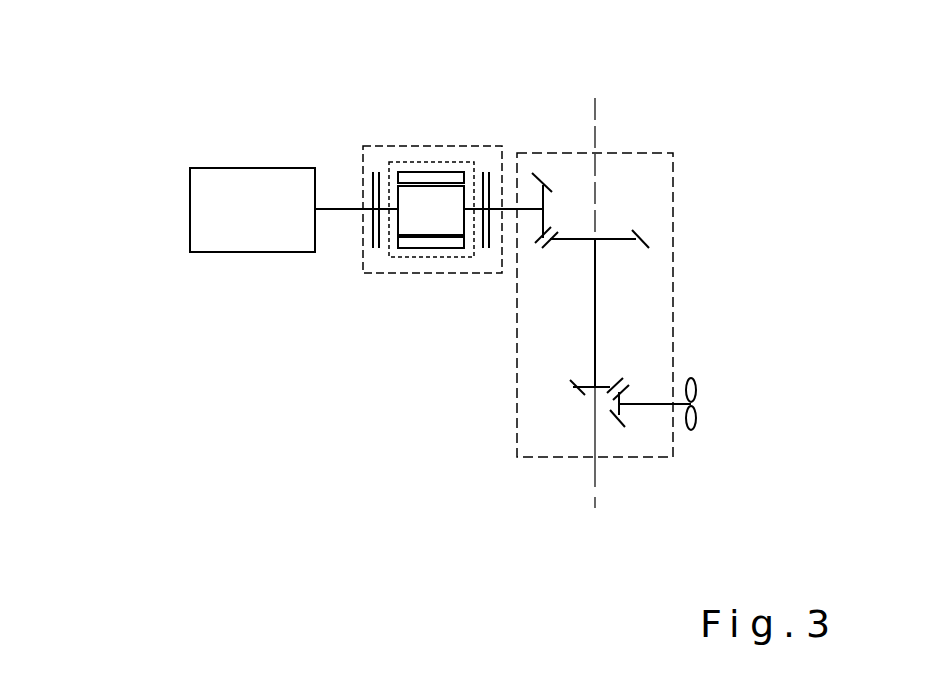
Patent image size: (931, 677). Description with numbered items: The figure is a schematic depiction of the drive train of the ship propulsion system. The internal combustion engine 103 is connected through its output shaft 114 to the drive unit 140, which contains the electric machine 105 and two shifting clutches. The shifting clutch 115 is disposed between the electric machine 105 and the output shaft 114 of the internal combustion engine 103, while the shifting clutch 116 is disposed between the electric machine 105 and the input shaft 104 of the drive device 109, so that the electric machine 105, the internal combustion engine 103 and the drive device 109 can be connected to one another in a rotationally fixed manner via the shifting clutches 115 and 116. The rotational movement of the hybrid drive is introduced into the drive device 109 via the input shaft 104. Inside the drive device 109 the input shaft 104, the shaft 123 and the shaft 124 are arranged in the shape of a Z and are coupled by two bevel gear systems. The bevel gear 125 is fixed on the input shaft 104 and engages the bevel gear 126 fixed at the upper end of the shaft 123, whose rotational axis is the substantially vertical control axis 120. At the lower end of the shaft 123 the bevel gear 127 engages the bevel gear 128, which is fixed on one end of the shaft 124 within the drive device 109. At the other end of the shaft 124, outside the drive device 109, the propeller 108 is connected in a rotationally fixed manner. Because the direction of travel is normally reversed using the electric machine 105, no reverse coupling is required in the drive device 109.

The internal combustion engine 103 is at (240, 195).
The output shaft 114 is at (343, 210).
The drive unit 140 is at (408, 147).
The electric machine 105 is at (440, 162).
The shifting clutch 115 is at (375, 230).
The shifting clutch 116 is at (485, 230).
The input shaft 104 is at (507, 210).
The bevel gear 125 is at (545, 200).
The bevel gear 126 is at (613, 239).
The shaft 123 is at (597, 288).
The drive device 109 is at (673, 325).
The bevel gear 127 is at (601, 383).
The bevel gear 128 is at (618, 402).
The shaft 124 is at (640, 405).
The propeller 108 is at (693, 392).
The control axis 120 is at (596, 487).